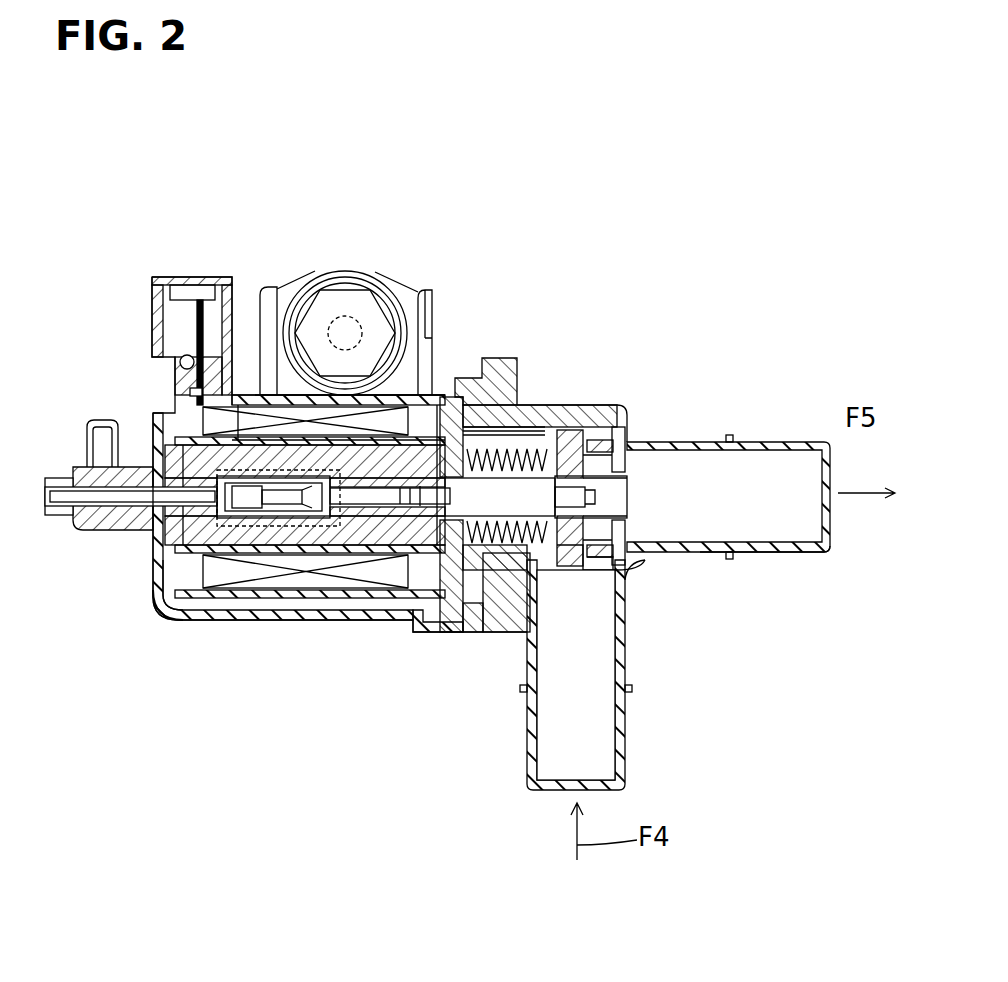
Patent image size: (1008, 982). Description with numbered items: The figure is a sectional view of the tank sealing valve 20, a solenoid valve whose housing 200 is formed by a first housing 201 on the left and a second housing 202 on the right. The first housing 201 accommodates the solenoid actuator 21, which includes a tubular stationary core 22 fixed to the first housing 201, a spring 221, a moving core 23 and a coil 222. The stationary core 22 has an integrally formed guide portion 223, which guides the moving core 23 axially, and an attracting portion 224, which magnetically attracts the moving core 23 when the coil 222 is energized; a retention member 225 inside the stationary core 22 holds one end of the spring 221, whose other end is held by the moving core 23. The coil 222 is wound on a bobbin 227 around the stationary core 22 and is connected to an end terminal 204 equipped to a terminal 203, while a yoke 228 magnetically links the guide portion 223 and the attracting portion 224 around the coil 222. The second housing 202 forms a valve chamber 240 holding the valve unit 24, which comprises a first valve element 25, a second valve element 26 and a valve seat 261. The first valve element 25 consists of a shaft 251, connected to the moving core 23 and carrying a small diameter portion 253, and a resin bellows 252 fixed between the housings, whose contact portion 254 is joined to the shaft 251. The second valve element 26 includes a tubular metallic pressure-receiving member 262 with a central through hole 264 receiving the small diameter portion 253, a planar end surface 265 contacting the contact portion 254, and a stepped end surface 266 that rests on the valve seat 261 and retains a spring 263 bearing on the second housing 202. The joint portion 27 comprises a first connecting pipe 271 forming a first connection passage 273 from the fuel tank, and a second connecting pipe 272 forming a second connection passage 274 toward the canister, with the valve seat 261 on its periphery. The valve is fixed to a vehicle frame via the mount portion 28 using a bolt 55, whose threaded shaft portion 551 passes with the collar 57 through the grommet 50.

The tank sealing valve 20 is at (707, 290).
The solenoid actuator 21 is at (222, 612).
The stationary core 22 is at (160, 535).
The moving core 23 is at (400, 580).
The valve unit 24 is at (520, 565).
The first valve element 25 is at (482, 553).
The second valve element 26 is at (568, 410).
The joint portion 27 is at (675, 579).
The mount portion 28 is at (393, 297).
The grommet 50 is at (398, 318).
The bolt 55 is at (348, 285).
The collar 57 is at (425, 300).
The housing 200 is at (155, 607).
The first housing 201 is at (158, 563).
The second housing 202 is at (608, 405).
The terminal 203 is at (152, 288).
The end terminal 204 is at (200, 290).
The spring 221 is at (248, 625).
The coil 222 is at (257, 537).
The guide portion 223 is at (368, 565).
The attracting portion 224 is at (297, 540).
The retention member 225 is at (238, 405).
The bobbin 227 is at (330, 560).
The yoke 228 is at (178, 607).
The valve chamber 240 is at (530, 440).
The shaft 251 is at (482, 480).
The bellows 252 is at (500, 440).
The small diameter portion 253 is at (622, 502).
The contact portion 254 is at (522, 540).
The valve seat 261 is at (640, 425).
The pressure-receiving member 262 is at (590, 425).
The spring 263 is at (627, 472).
The through hole 264 is at (627, 495).
The end surface 265 is at (557, 548).
The end surface 266 is at (605, 550).
The first connecting pipe 271 is at (620, 753).
The second connecting pipe 272 is at (797, 545).
The first connection passage 273 is at (587, 717).
The second connection passage 274 is at (765, 465).
The shaft portion 551 is at (333, 318).